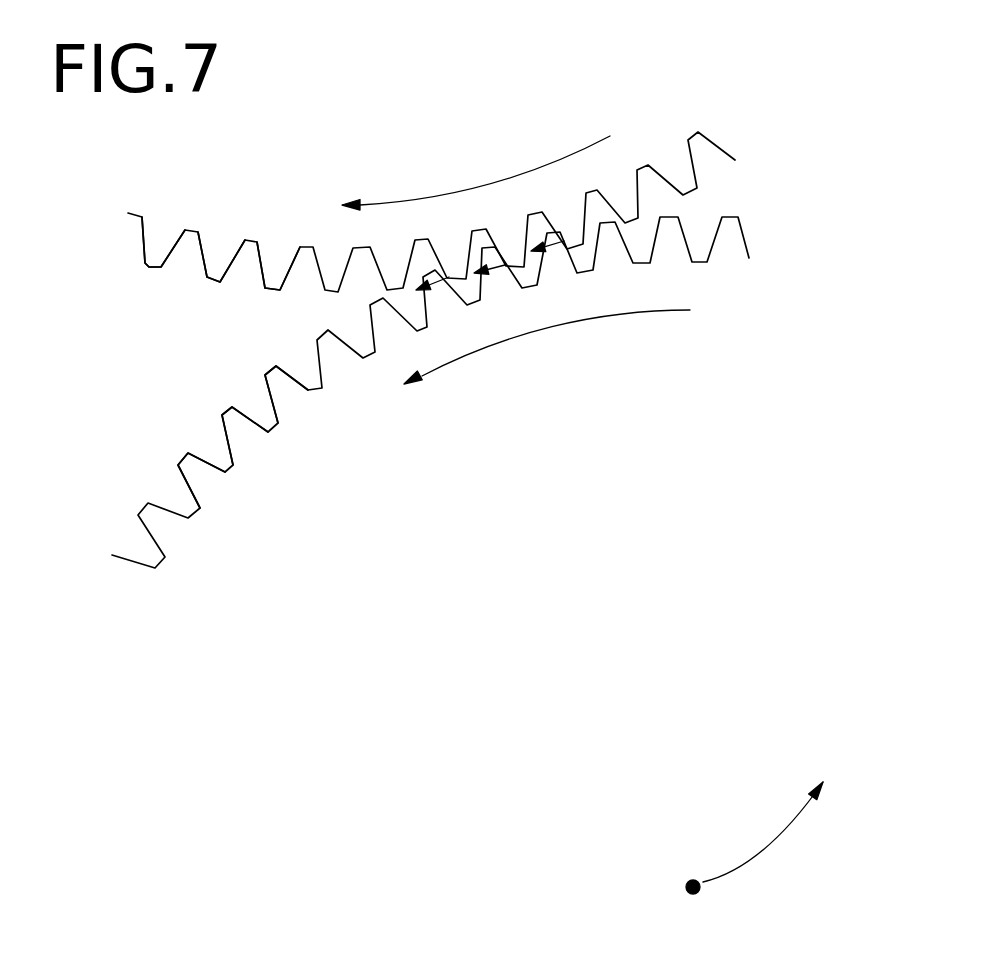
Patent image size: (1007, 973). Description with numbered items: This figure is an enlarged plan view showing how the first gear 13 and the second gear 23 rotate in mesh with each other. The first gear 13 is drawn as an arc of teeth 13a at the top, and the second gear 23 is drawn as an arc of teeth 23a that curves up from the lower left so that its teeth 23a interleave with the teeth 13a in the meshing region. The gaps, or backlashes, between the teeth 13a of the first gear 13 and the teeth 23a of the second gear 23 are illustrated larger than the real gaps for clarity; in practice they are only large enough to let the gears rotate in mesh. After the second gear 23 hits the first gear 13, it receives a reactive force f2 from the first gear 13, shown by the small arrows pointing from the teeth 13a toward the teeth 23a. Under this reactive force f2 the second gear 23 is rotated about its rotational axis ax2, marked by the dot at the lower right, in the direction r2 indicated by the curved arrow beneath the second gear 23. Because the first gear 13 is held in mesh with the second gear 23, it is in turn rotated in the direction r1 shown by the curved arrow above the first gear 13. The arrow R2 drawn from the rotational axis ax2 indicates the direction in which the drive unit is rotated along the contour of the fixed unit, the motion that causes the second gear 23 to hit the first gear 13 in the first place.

The first gear 13 is at (702, 181).
The teeth of the first gear 13a is at (155, 252).
The second gear 23 is at (748, 242).
The teeth of the second gear 23a is at (186, 470).
The rotation direction of the first gear r1 is at (476, 173).
The rotation direction of the second gear r2 is at (547, 347).
The reactive force f2 is at (493, 284).
The rotational axis of the second gear ax2 is at (665, 887).
The direction of rotation of the drive unit R2 is at (771, 817).